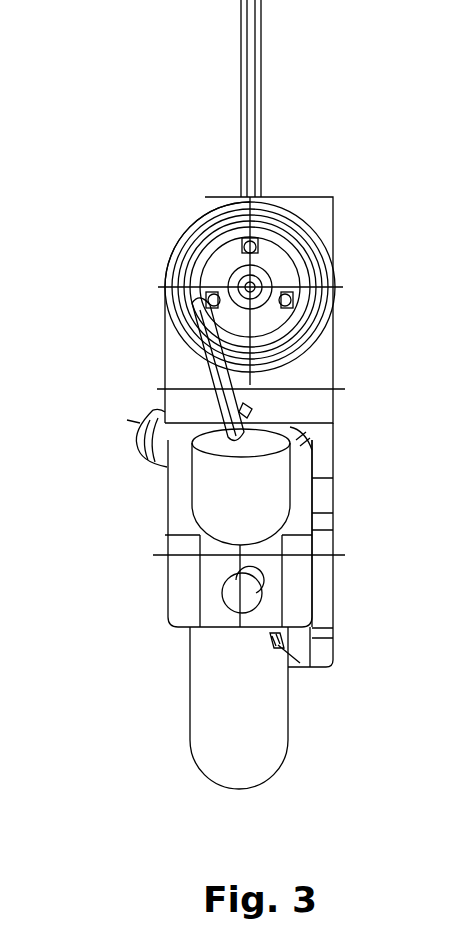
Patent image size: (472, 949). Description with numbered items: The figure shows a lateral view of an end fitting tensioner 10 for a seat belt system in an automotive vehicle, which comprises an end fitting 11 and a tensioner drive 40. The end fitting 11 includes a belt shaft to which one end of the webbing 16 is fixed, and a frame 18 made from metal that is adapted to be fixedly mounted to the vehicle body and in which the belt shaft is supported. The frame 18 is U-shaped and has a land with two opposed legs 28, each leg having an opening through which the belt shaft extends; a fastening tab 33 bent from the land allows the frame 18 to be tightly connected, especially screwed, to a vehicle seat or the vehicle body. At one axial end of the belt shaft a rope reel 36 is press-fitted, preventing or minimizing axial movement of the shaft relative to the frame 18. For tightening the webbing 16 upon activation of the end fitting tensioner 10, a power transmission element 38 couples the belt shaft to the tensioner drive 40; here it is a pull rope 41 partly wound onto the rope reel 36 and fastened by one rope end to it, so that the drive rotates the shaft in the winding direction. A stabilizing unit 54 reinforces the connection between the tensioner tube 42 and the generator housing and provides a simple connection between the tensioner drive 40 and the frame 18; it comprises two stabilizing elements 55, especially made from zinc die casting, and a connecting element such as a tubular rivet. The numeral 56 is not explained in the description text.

The end fitting tensioner 10 is at (127, 134).
The end fitting 11 is at (344, 457).
The webbing 16 is at (259, 96).
The frame 18 is at (313, 377).
The leg 28 is at (325, 200).
The fastening tab 33 is at (320, 640).
The rope reel 36 is at (290, 268).
The power transmission element 38 is at (212, 366).
The tensioner drive 40 is at (138, 660).
The pull rope 41 is at (185, 368).
The tensioner tube 42 is at (267, 727).
The stabilizing unit 54 is at (320, 665).
The stabilizing element 55 is at (295, 587).
The sleeve 56 is at (345, 556).